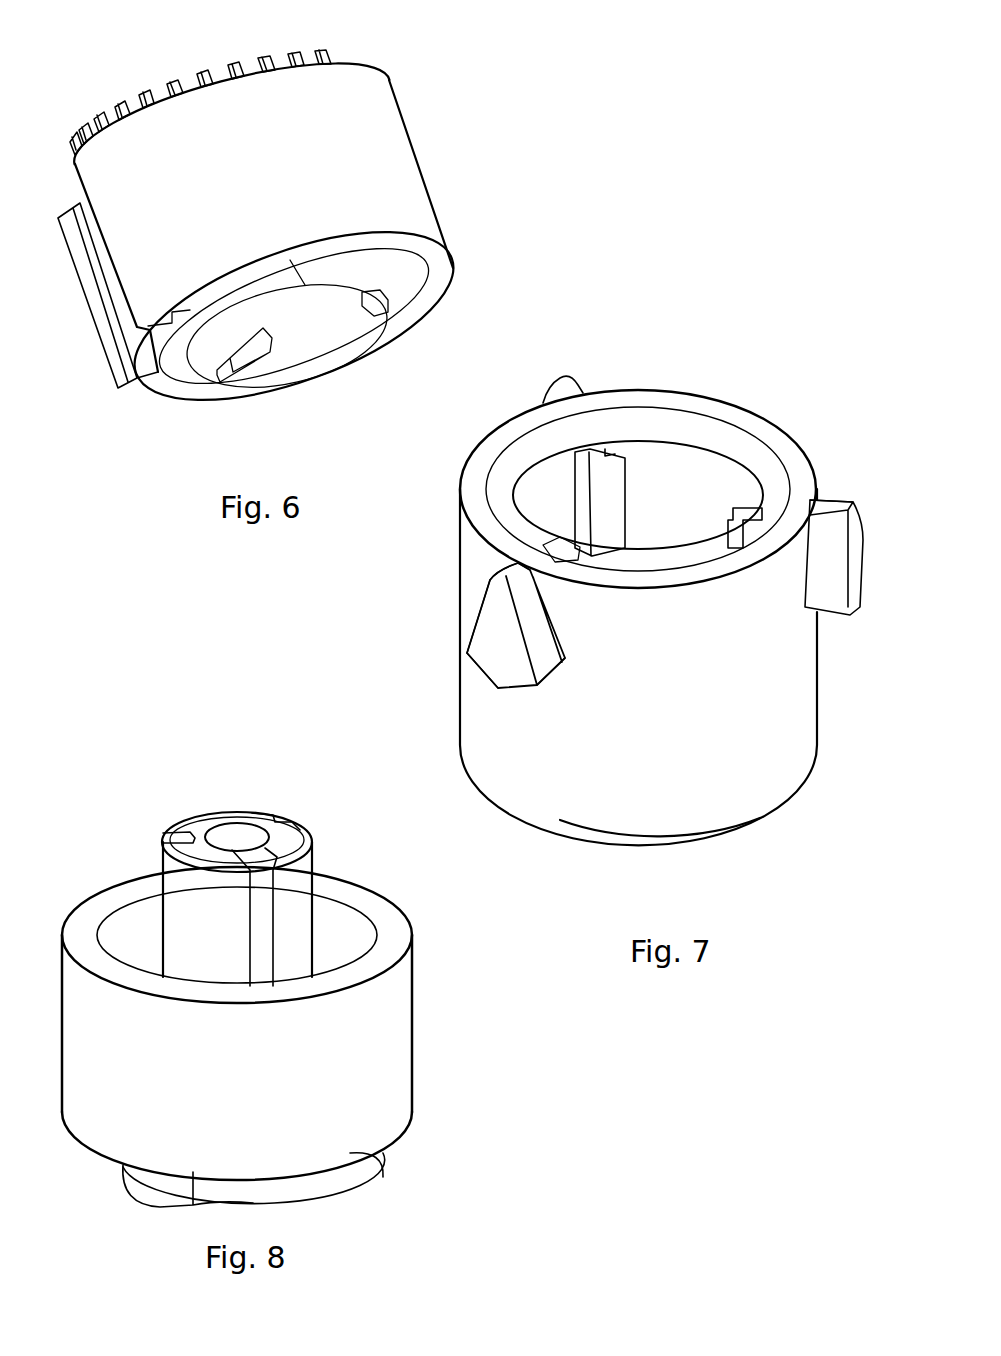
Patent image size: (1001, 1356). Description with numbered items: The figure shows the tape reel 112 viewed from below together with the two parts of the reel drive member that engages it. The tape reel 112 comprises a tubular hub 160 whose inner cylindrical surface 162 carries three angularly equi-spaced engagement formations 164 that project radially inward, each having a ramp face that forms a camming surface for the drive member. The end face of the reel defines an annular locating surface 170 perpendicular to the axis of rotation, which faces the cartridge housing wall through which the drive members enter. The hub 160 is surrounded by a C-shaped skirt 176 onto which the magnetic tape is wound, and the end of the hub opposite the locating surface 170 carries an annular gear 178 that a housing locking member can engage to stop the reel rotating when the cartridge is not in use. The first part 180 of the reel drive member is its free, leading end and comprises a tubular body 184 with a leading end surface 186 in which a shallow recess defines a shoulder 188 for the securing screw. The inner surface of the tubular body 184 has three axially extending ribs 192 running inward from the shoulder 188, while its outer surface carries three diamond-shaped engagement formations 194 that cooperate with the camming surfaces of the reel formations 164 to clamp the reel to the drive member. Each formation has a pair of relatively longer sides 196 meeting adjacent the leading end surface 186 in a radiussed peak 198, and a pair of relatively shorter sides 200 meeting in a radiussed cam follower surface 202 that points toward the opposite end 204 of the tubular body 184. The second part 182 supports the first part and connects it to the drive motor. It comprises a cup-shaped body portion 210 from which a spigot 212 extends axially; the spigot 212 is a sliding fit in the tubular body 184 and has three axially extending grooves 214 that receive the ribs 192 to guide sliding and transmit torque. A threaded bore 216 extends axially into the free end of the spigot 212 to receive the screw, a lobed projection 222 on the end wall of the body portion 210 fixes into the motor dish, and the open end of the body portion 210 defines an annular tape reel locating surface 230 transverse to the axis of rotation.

In FIG. 6, the tape reel 112 is at (88, 74).
In FIG. 6, the tubular hub 160 is at (387, 270).
In FIG. 6, the inner cylindrical surface 162 is at (200, 370).
In FIG. 6, the engagement formations 164 is at (368, 308).
In FIG. 6, the annular locating surface 170 is at (155, 383).
In FIG. 6, the C-shaped skirt 176 is at (418, 193).
In FIG. 6, the annular gear 178 is at (215, 52).
In FIG. 7, the first part 180 is at (693, 326).
In FIG. 7, the tubular body 184 is at (650, 800).
In FIG. 7, the leading end surface 186 is at (712, 405).
In FIG. 7, the shoulder 188 is at (735, 455).
In FIG. 7, the axially extending ribs 192 is at (602, 452).
In FIG. 7, the engagement formations 194 is at (562, 374).
In FIG. 7, the relatively longer sides 196 is at (528, 578).
In FIG. 7, the radiussed peak 198 is at (512, 575).
In FIG. 7, the relatively shorter sides 200 is at (475, 663).
In FIG. 7, the radiussed cam follower surface 202 is at (498, 690).
In FIG. 7, the opposite end 204 is at (730, 830).
In FIG. 8, the second part 182 is at (478, 1043).
In FIG. 8, the cup-shaped body portion 210 is at (412, 1000).
In FIG. 8, the spigot 212 is at (200, 815).
In FIG. 8, the axially extending grooves 214 is at (273, 820).
In FIG. 8, the threaded bore 216 is at (238, 835).
In FIG. 8, the lobed projection 222 is at (283, 1186).
In FIG. 8, the annular tape reel locating surface 230 is at (387, 913).